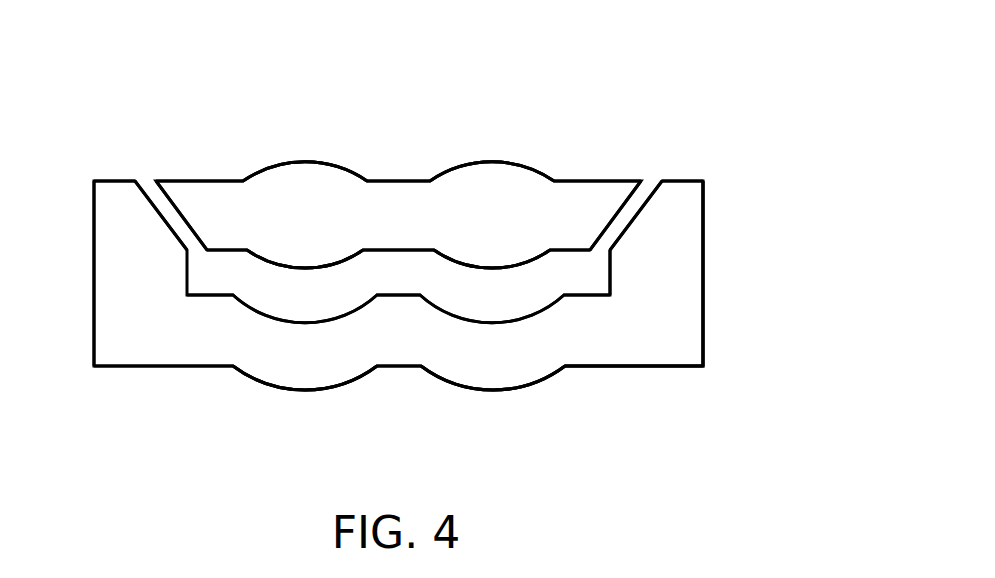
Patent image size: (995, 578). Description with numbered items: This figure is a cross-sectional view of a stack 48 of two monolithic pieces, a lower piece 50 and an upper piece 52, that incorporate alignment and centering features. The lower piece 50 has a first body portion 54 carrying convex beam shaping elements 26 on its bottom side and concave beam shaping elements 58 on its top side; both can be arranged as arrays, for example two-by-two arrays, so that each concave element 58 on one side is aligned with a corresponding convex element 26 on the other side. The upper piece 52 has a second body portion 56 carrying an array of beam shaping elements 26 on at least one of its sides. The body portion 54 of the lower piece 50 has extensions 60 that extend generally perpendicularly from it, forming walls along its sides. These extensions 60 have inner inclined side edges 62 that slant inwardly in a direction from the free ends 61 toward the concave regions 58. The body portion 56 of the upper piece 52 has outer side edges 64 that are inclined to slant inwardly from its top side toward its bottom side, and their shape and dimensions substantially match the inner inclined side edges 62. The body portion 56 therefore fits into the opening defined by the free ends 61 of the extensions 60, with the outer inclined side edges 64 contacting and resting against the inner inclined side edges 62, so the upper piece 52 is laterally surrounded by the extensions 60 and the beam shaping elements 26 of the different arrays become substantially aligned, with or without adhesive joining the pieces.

The stack 48 is at (727, 108).
The beam shaping elements 26 is at (307, 160).
The lower monolithic piece 50 is at (397, 353).
The upper monolithic piece 52 is at (413, 194).
The first body portion 54 is at (645, 350).
The second body portion 56 is at (538, 213).
The concave beam shaping elements 58 is at (300, 323).
The extensions 60 is at (94, 303).
The free ends 61 is at (113, 180).
The inner inclined side edges 62 is at (172, 203).
The outer inclined side edges 64 is at (180, 227).